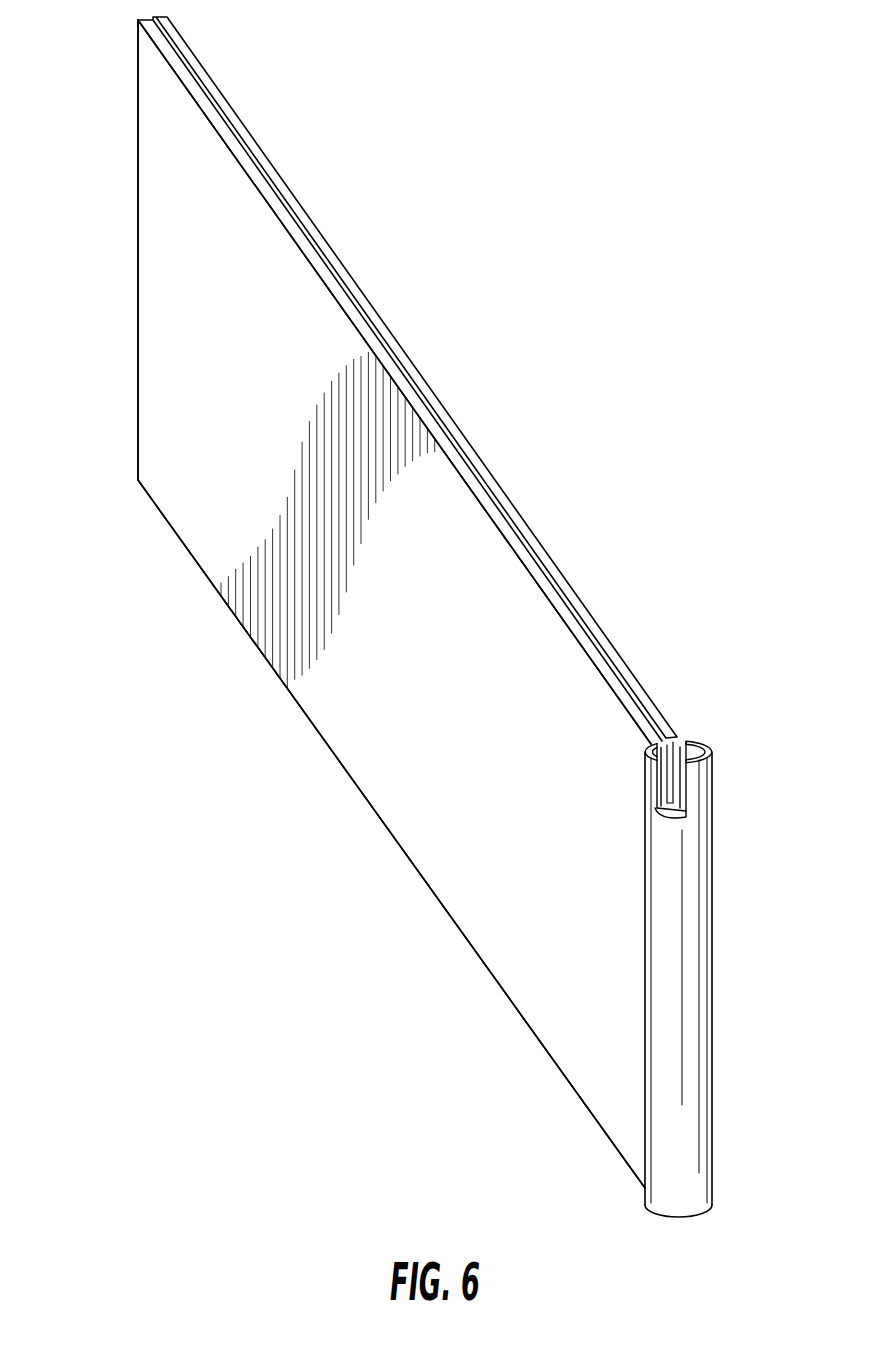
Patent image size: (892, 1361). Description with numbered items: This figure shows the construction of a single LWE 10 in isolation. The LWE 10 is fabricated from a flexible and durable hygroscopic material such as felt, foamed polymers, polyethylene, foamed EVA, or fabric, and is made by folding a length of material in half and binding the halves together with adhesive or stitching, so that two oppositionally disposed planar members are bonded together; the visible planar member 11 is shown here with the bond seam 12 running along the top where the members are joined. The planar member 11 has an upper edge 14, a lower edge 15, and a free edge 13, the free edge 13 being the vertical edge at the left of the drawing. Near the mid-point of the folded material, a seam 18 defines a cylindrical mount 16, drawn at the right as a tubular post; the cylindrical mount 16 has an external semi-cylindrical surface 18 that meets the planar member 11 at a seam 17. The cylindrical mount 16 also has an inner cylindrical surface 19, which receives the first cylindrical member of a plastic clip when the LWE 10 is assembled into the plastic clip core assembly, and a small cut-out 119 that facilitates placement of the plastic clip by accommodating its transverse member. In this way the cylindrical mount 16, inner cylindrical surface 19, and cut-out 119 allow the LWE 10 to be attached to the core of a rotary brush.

The LWE 10 is at (278, 100).
The planar member 11 is at (153, 323).
The bond seam 12 is at (510, 511).
The free edge 13 is at (138, 142).
The upper edge 14 is at (368, 303).
The lower edge 15 is at (357, 790).
The cylindrical mount 16 is at (703, 749).
The seam 17 is at (655, 932).
The external semi-cylindrical surface 18 is at (692, 1069).
The inner cylindrical surface 19 is at (666, 800).
The cut-out 119 is at (680, 802).